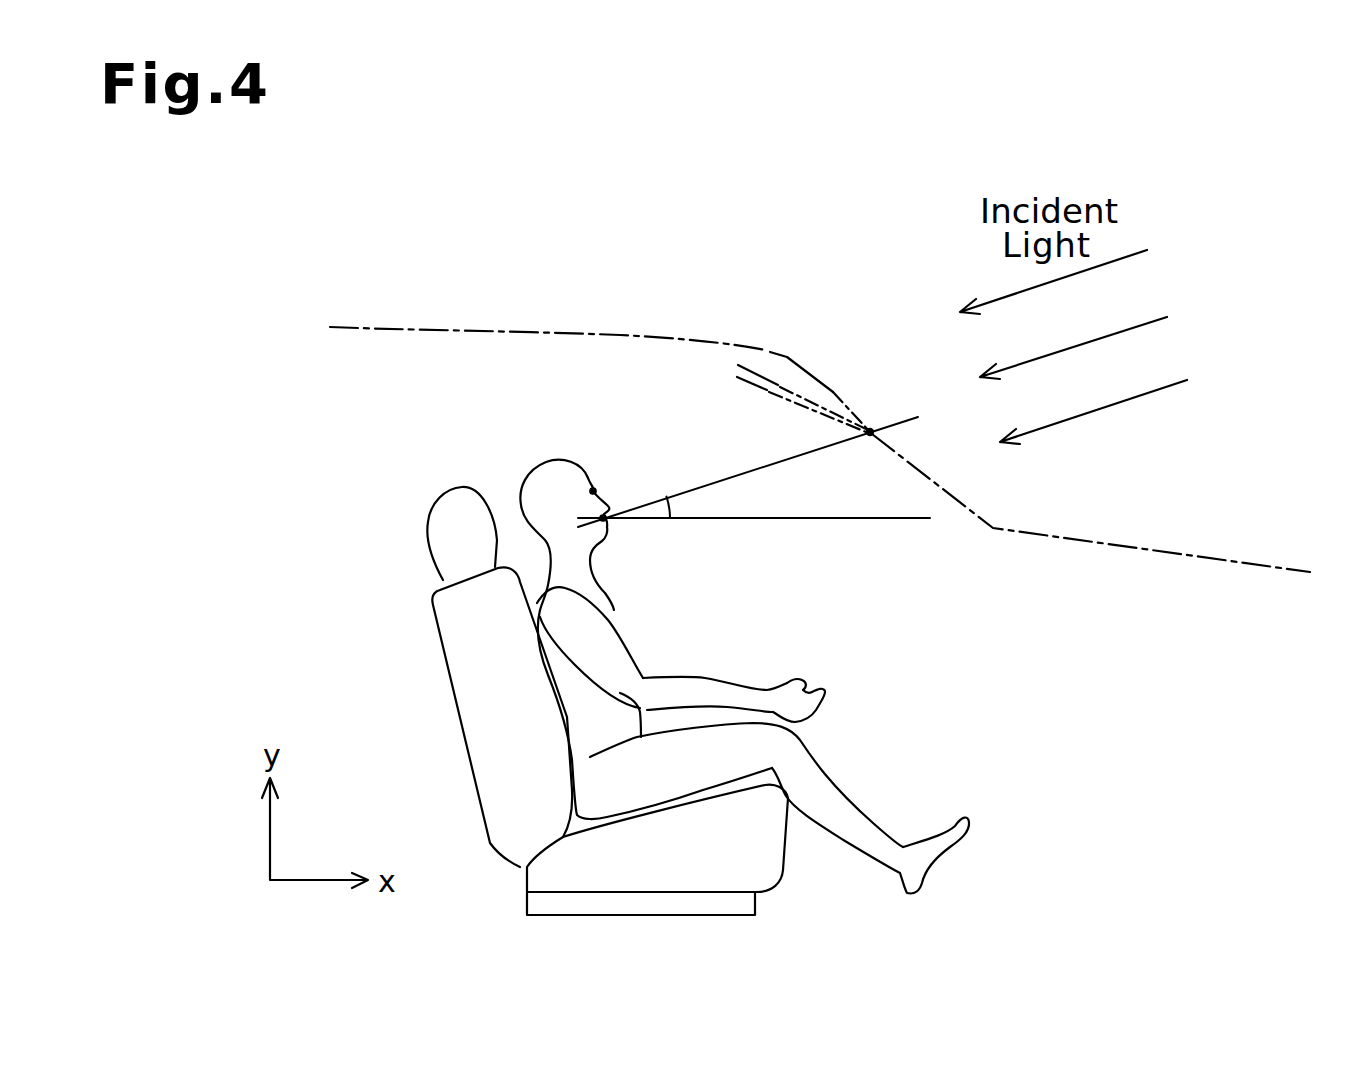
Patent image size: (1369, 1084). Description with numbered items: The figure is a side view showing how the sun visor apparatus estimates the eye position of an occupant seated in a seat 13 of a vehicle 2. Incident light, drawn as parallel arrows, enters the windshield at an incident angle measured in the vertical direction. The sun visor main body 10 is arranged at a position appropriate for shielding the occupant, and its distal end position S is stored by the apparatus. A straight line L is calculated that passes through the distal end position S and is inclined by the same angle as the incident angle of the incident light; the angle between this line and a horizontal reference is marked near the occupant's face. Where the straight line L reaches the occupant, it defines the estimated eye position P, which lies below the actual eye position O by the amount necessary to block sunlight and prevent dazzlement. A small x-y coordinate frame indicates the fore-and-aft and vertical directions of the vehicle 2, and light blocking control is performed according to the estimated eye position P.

The vehicle 2 is at (1150, 546).
The sun visor main body 10 is at (775, 385).
The seat 13 is at (460, 692).
The actual eye position O is at (594, 486).
The eye position P is at (604, 523).
The distal end position S is at (872, 436).
The straight line L is at (722, 482).